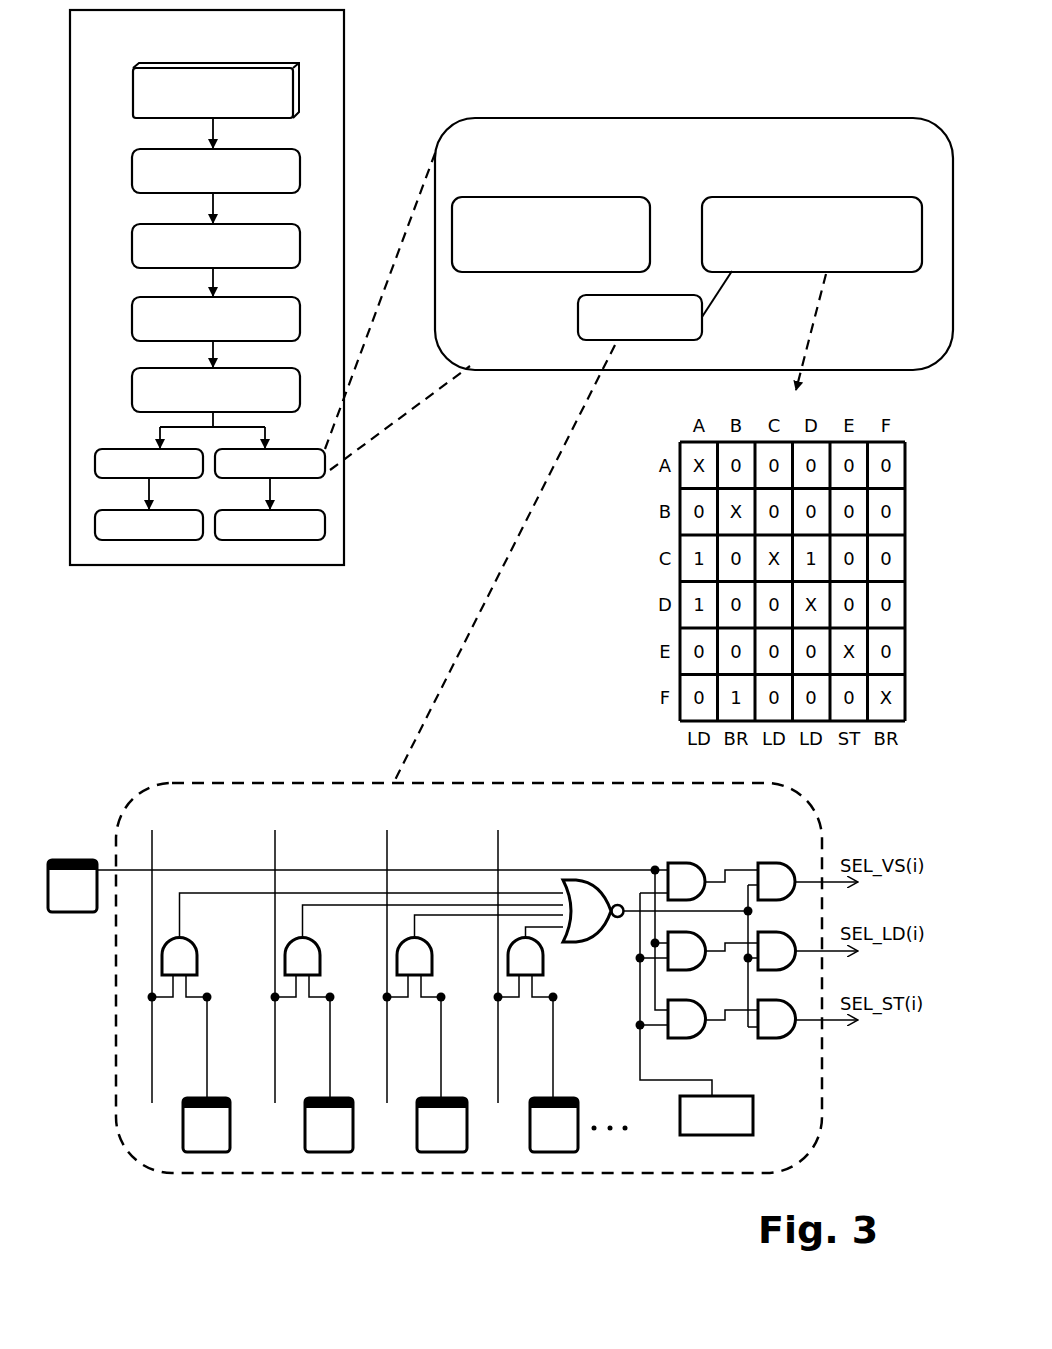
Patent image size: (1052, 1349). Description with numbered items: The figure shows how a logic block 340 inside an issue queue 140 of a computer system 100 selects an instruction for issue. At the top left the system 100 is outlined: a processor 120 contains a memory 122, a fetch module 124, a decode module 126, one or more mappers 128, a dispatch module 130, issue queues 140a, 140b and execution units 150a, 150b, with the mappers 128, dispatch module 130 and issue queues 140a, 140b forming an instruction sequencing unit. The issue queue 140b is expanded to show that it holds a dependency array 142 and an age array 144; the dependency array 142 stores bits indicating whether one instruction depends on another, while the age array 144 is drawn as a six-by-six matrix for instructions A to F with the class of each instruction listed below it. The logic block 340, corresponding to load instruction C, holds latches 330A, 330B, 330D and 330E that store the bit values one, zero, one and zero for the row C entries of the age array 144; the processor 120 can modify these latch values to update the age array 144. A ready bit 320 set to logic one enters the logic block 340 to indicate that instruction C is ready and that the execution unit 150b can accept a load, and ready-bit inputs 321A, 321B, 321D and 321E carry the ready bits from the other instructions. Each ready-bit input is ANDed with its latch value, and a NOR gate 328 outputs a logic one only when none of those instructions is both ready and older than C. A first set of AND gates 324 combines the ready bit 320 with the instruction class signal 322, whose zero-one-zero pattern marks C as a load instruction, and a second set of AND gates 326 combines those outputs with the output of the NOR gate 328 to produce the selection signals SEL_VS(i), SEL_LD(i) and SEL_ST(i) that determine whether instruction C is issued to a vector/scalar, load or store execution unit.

The computer system 100 is at (652, 79).
The processor 120 is at (125, 48).
The memory 122 is at (216, 90).
The fetch module 124 is at (216, 171).
The decode module 126 is at (216, 246).
The mapper 128 is at (216, 319).
The dispatch module 130 is at (216, 390).
The issue queue 140a is at (149, 463).
The issue queue 140b is at (270, 463).
The execution unit 150a is at (149, 525).
The execution unit 150b is at (270, 525).
The issue queue 140 is at (790, 172).
The dependency array 142 is at (551, 234).
The age array 144 is at (812, 293).
The logic block 340 is at (250, 783).
The ready bit 320 is at (72, 860).
The ready-bit input 321A is at (152, 845).
The ready-bit input 321B is at (275, 845).
The ready-bit input 321D is at (387, 845).
The ready-bit input 321E is at (498, 845).
The NOR gate 328 is at (598, 886).
The first set of AND gates 324 is at (707, 845).
The second set of AND gates 326 is at (797, 848).
The instruction class signal 322 is at (755, 1119).
The latch 330A is at (200, 1155).
The latch 330B is at (330, 1154).
The latch 330D is at (442, 1154).
The latch 330E is at (555, 1154).